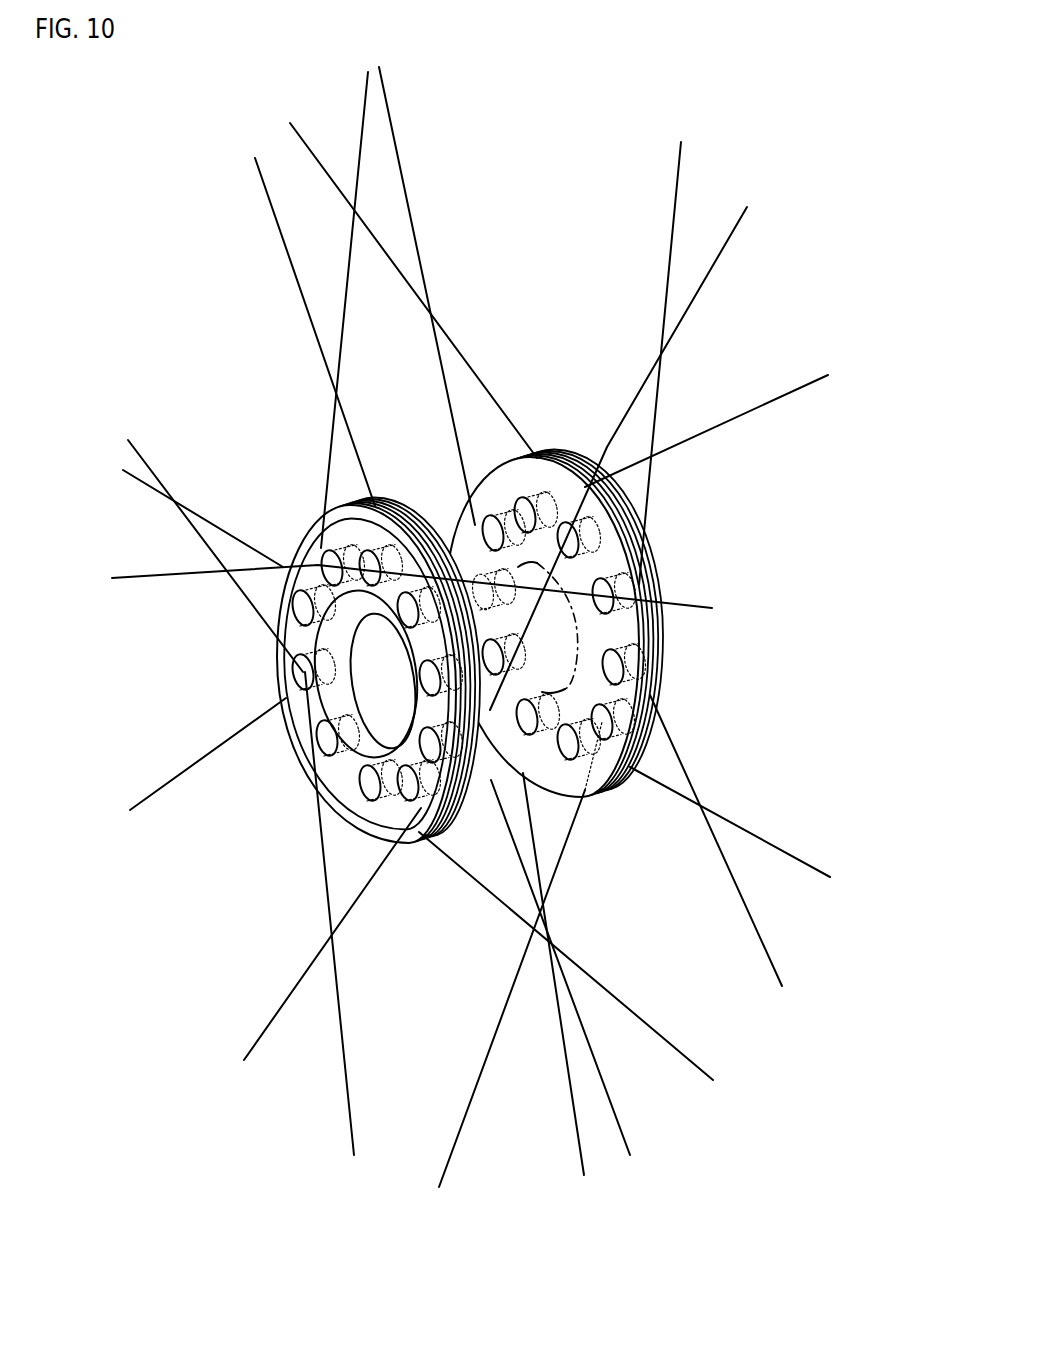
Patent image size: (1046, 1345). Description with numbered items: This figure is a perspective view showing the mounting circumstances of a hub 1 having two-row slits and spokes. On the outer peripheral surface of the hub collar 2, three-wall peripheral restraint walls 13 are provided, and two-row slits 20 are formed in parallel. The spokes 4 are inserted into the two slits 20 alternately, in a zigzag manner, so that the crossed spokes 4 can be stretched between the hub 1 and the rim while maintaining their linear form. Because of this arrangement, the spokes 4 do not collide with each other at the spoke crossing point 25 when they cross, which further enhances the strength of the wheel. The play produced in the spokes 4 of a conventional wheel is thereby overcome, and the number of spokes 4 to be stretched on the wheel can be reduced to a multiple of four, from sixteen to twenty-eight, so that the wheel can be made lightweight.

The hub 1 is at (258, 677).
The hub collar 2 is at (308, 552).
The spoke 4 is at (276, 1016).
The peripheral restraint wall 13 is at (294, 548).
The slit 20 is at (655, 619).
The crossing point 25 is at (330, 934).